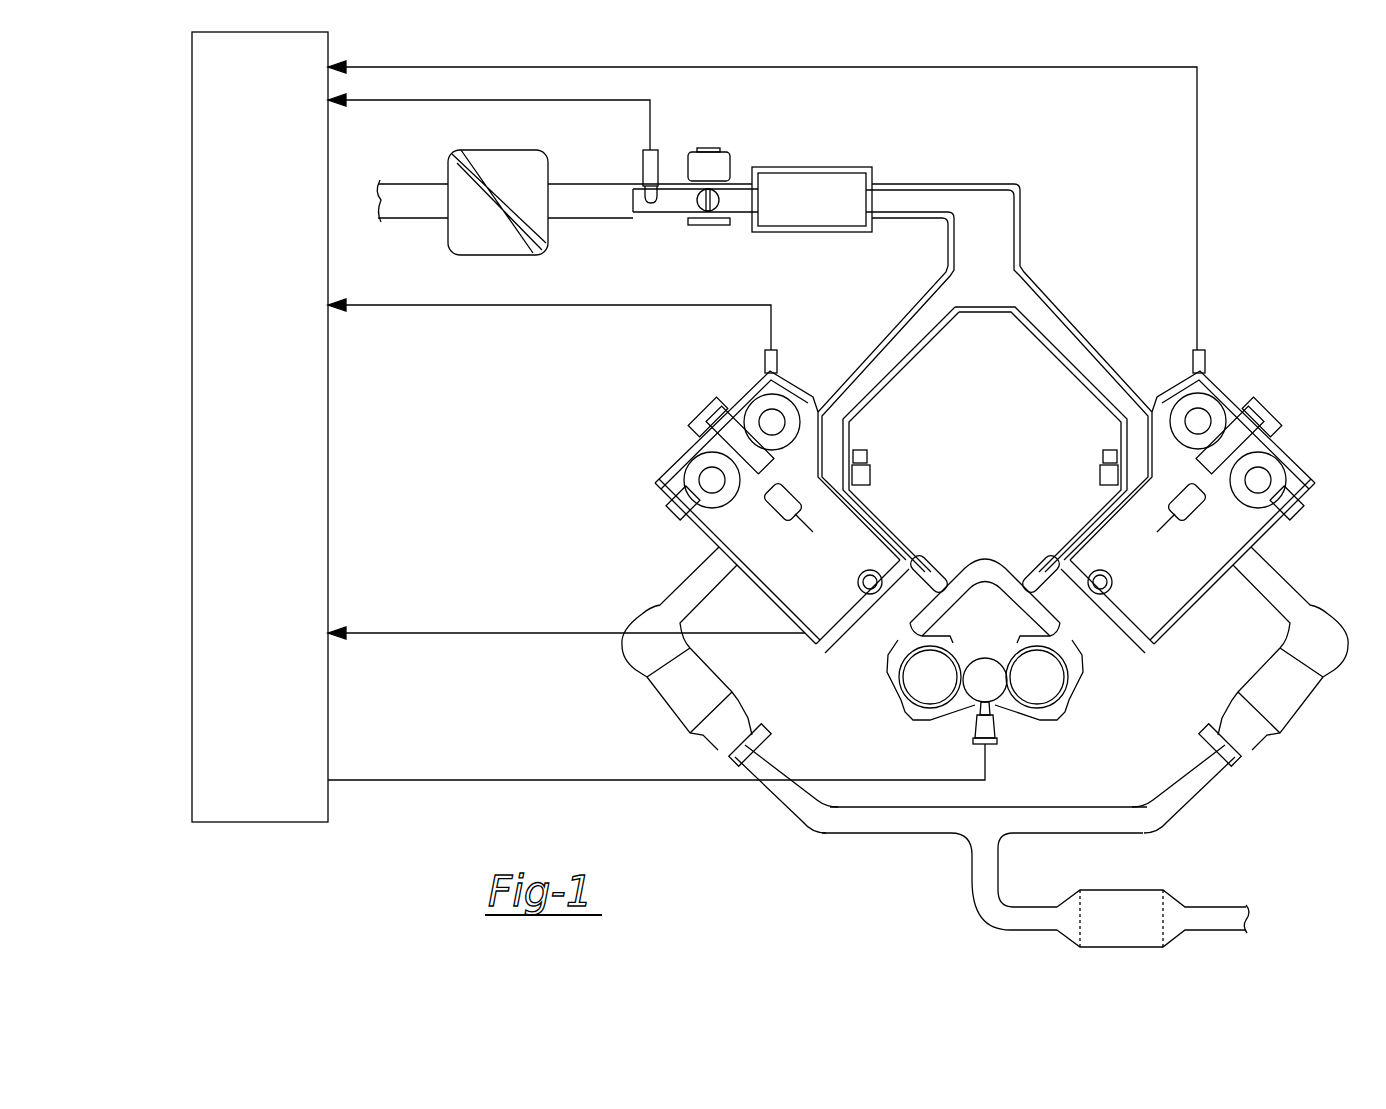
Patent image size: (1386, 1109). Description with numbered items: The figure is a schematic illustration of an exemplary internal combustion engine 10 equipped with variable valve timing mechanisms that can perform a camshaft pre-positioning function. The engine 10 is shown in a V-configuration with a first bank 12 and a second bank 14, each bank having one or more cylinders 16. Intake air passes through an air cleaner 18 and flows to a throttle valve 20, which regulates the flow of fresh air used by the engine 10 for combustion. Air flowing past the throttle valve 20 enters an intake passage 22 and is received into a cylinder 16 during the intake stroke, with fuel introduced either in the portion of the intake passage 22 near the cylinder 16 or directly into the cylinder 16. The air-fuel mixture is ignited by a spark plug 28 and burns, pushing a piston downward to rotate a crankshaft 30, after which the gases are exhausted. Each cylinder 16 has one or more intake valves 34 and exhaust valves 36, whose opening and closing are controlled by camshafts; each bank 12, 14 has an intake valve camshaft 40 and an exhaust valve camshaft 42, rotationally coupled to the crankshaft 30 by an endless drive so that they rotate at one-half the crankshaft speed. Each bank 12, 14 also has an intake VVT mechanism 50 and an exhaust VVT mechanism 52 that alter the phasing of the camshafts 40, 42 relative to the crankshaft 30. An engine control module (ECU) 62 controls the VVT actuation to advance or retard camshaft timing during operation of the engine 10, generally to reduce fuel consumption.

The internal combustion engine 10 is at (1243, 160).
The first bank 12 is at (600, 436).
The second bank 14 is at (1272, 326).
The cylinder 16 is at (1037, 547).
The air cleaner 18 is at (500, 150).
The throttle valve 20 is at (719, 200).
The intake passage 22 is at (980, 184).
The spark plug 28 is at (705, 405).
The crankshaft 30 is at (997, 703).
The intake valve 34 is at (833, 490).
The exhaust valve 36 is at (767, 519).
The intake valve camshaft 40 is at (780, 410).
The exhaust valve camshaft 42 is at (703, 482).
The intake VVT mechanism 50 is at (747, 407).
The exhaust VVT mechanism 52 is at (686, 500).
The engine control module (ECU) 62 is at (192, 412).